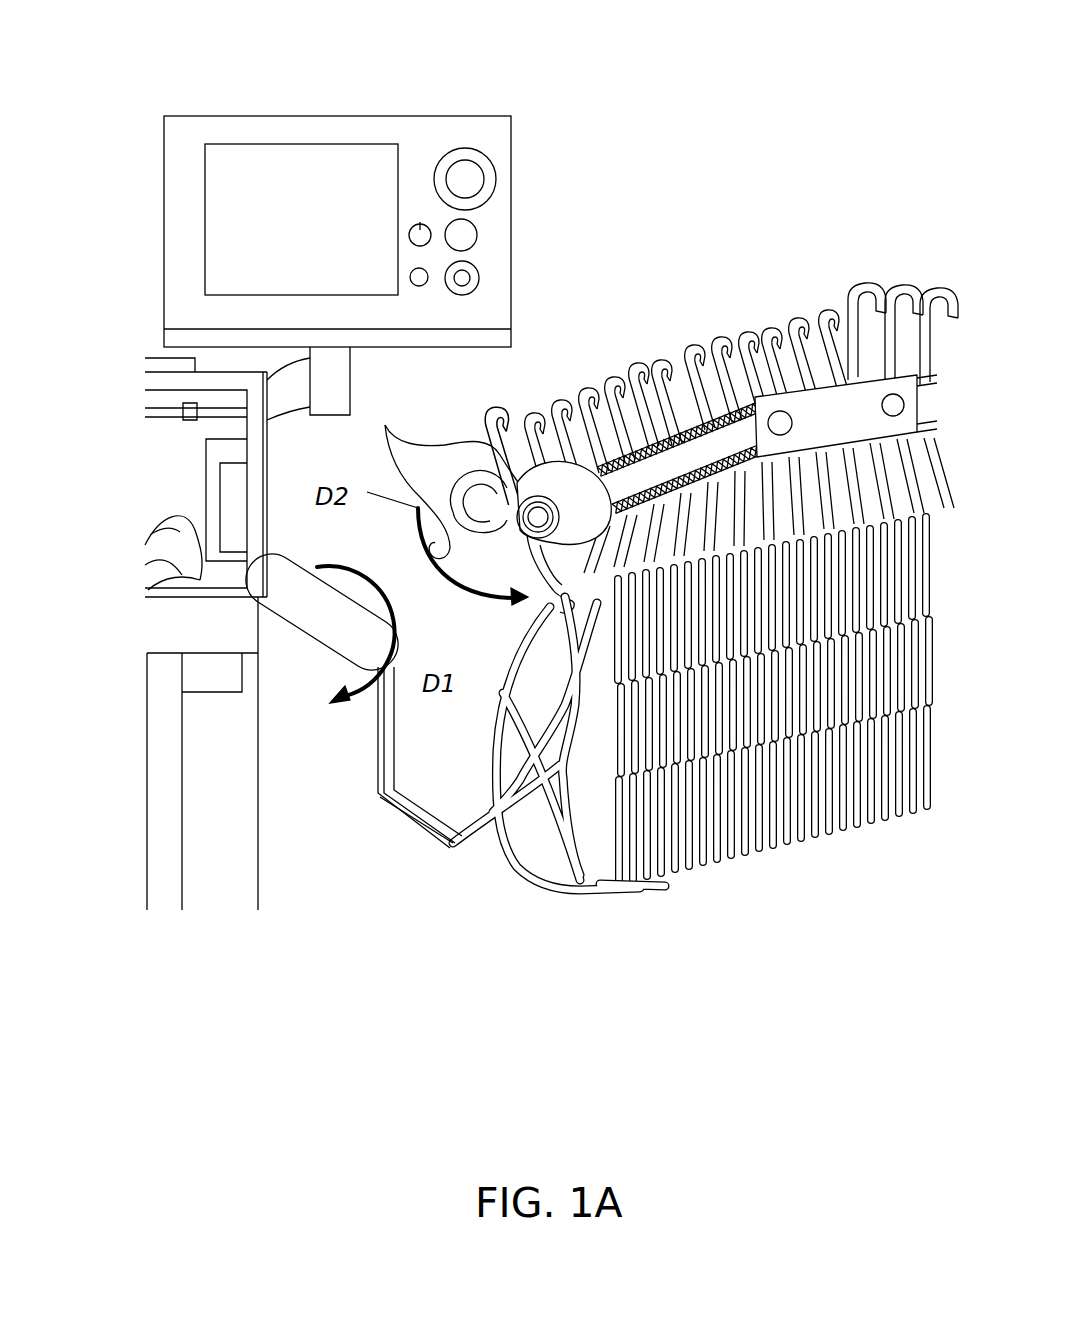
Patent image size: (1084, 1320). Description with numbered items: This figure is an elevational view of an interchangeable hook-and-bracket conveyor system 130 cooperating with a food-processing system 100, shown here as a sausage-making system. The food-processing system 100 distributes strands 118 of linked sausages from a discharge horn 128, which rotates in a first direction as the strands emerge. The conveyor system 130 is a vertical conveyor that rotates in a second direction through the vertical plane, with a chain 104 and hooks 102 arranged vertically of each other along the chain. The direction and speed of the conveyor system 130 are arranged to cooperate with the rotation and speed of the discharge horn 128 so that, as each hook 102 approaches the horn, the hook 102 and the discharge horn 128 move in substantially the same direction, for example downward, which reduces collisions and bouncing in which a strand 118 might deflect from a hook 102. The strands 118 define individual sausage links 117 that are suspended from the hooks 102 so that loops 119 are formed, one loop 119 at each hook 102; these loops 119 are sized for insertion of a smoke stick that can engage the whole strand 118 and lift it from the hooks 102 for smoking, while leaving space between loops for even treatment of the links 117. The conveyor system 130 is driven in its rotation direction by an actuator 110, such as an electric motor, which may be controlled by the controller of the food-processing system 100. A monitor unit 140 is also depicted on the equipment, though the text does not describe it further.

The food-processing system 100 is at (125, 236).
The hook 102 is at (664, 448).
The chain 104 is at (728, 413).
The actuator 110 is at (540, 507).
The sausage link 117 is at (425, 840).
The strand 118 is at (377, 850).
The loop 119 is at (647, 893).
The discharge horn 128 is at (299, 610).
The conveyor system 130 is at (822, 402).
The monitor 140 is at (419, 195).